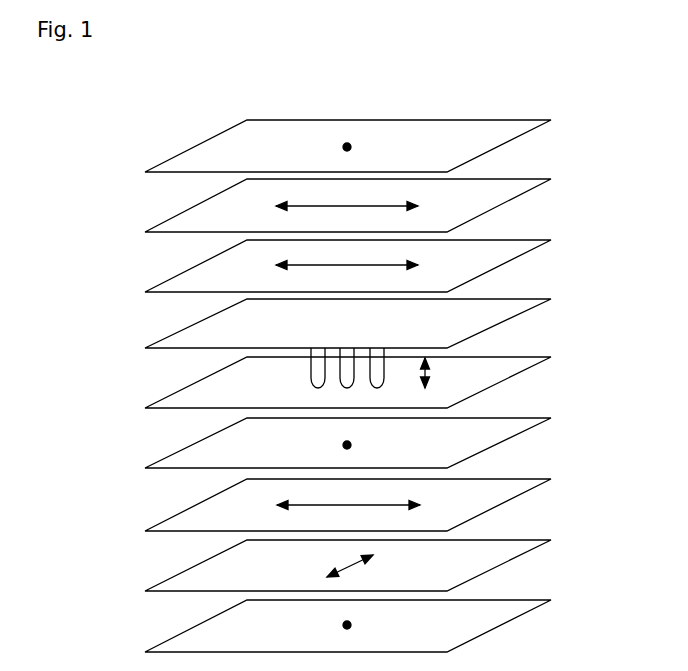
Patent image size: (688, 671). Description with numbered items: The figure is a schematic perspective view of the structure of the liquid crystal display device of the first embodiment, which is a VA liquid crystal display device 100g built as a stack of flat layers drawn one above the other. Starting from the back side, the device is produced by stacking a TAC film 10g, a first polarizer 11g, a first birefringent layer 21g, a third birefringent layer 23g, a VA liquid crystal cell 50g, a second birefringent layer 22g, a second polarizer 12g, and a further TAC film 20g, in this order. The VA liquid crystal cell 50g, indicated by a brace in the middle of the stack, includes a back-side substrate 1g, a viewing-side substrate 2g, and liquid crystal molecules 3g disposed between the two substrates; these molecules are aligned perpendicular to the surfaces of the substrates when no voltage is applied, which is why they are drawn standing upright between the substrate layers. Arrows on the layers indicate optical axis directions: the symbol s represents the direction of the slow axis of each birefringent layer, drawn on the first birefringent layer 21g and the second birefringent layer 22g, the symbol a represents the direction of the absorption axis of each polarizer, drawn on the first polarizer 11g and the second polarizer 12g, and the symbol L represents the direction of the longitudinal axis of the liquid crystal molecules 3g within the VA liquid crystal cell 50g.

The VA liquid crystal display device 100g is at (621, 87).
The TAC film 20g is at (486, 139).
The second polarizer 12g is at (486, 198).
The second birefringent layer 22g is at (486, 258).
The VA liquid crystal cell 50g is at (357, 353).
The viewing-side substrate 2g is at (182, 336).
The liquid crystal molecules 3g is at (312, 370).
The back-side substrate 1g is at (176, 399).
The direction of the longitudinal axis of the liquid crystal molecules L is at (432, 368).
The third birefringent layer 23g is at (486, 436).
The first birefringent layer 21g is at (486, 497).
The first polarizer 11g is at (486, 558).
The TAC film 10g is at (486, 618).
The direction of the absorption axis of each polarizer a is at (276, 205).
The direction of the slow axis of each birefringent layer s is at (276, 264).